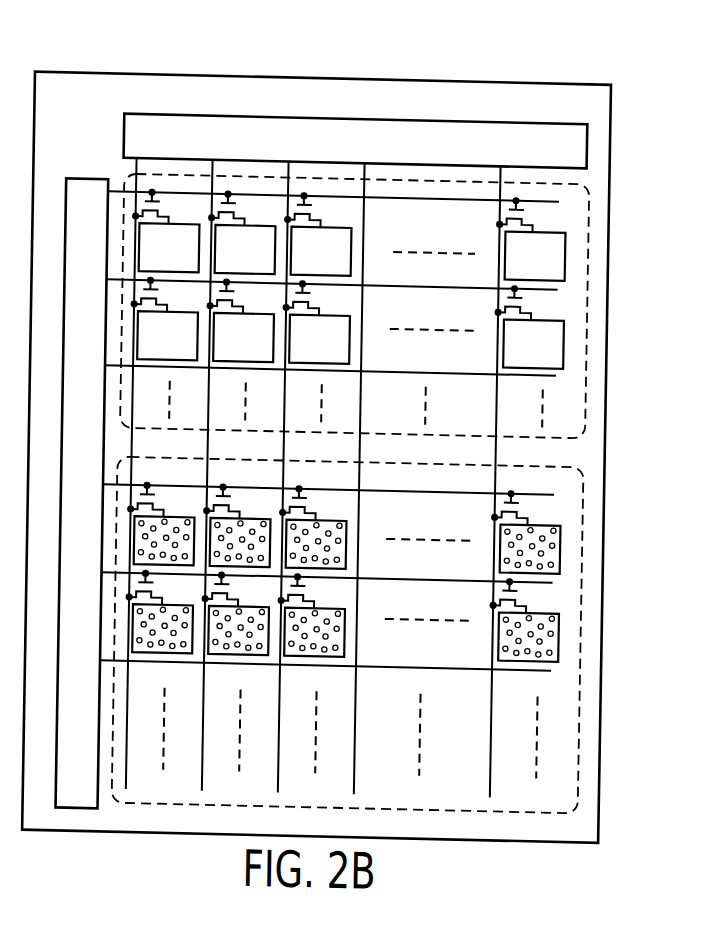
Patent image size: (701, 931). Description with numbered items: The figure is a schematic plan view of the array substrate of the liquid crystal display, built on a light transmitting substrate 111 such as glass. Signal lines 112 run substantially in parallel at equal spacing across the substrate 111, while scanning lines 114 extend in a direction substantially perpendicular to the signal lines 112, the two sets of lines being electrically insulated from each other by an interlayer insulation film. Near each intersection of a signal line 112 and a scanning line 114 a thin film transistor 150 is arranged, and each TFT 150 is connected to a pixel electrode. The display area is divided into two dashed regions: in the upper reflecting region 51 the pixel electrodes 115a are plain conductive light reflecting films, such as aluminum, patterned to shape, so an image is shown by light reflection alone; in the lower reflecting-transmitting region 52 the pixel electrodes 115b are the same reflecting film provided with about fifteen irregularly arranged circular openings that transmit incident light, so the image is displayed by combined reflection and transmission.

The light transmitting substrate 111 is at (93, 73).
The scanning lines 114 is at (432, 193).
The signal lines 112 is at (364, 740).
The thin film transistor 150 is at (312, 297).
The pixel electrode (reflecting region) 115a is at (567, 335).
The pixel electrode (reflecting-transmitting region) 115b is at (566, 528).
The reflecting region 51 is at (591, 244).
The reflecting-transmitting region 52 is at (589, 578).